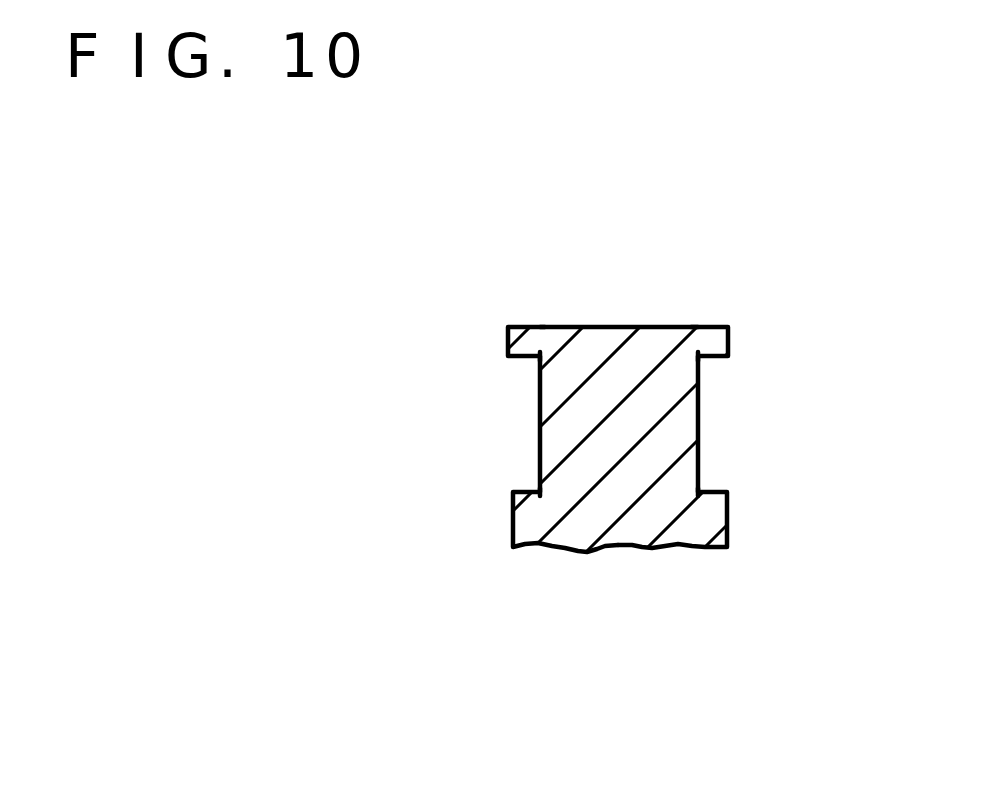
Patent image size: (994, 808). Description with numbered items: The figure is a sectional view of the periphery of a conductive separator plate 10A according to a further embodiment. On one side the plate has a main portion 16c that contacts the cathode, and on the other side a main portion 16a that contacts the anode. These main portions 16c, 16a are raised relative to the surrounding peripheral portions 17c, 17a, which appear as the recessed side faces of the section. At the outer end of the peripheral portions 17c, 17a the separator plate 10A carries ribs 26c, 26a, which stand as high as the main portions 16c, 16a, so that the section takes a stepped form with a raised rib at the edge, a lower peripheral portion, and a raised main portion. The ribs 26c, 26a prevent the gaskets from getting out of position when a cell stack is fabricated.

The separator plate 10A is at (623, 363).
The rib 26a is at (527, 345).
The rib 26c is at (714, 339).
The peripheral portion 17a is at (540, 410).
The peripheral portion 17c is at (698, 422).
The main portion 16a is at (513, 525).
The main portion 16c is at (728, 512).